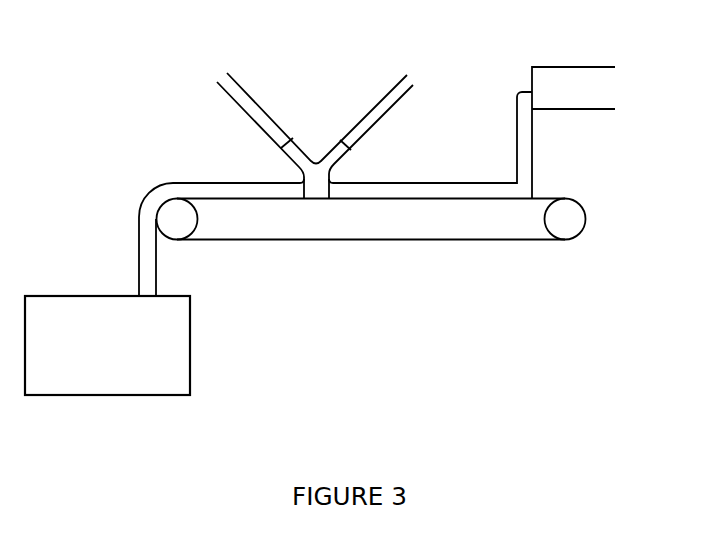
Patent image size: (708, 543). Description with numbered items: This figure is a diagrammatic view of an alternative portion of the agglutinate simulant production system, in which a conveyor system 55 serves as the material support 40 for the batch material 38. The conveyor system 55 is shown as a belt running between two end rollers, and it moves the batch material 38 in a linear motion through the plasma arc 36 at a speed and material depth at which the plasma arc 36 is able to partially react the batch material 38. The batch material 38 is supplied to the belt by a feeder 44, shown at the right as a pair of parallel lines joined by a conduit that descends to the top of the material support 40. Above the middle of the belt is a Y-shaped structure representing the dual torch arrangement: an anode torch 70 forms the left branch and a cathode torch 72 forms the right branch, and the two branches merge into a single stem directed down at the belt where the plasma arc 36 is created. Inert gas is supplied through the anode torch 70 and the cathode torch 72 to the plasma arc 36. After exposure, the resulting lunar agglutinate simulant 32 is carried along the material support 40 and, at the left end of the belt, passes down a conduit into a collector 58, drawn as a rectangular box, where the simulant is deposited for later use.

The lunar agglutinate simulant 32 is at (234, 187).
The plasma arc 36 is at (334, 158).
The batch material 38 is at (452, 188).
The material support 40 is at (393, 200).
The feeder 44 is at (565, 77).
The conveyor system 55 is at (342, 268).
The collector 58 is at (190, 347).
The anode torch 70 is at (242, 100).
The cathode torch 72 is at (378, 111).